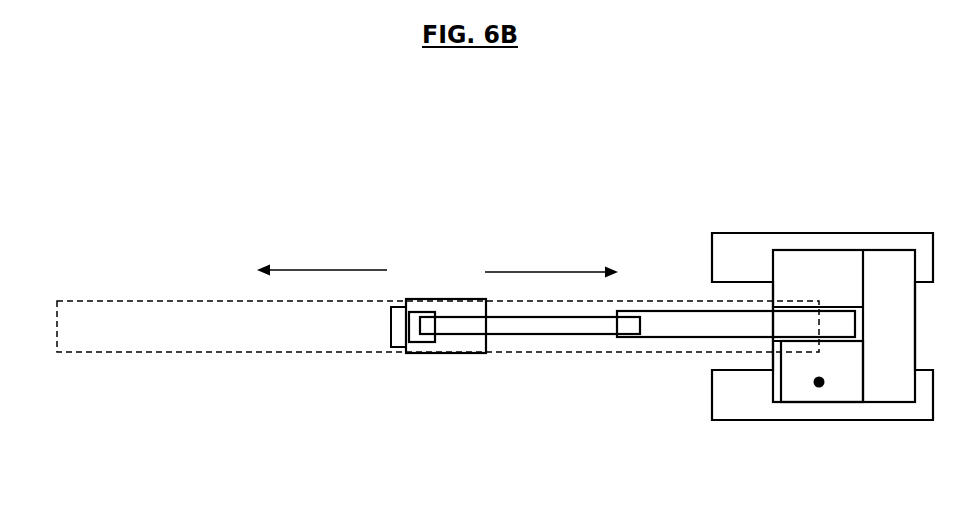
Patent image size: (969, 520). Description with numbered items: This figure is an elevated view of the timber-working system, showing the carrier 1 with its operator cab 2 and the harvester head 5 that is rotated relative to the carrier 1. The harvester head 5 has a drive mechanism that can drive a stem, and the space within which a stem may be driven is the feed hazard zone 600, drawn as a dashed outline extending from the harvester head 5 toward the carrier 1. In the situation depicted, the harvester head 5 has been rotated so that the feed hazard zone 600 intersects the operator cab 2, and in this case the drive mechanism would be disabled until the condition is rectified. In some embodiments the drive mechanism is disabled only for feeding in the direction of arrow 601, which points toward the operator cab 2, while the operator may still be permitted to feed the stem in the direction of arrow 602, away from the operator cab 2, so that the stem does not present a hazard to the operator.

The carrier 1 is at (757, 233).
The operator cab 2 is at (819, 382).
The harvester head 5 is at (437, 353).
The feed hazard zone 600 is at (657, 352).
The arrow indicating disabled feed direction 601 is at (551, 260).
The arrow indicating permitted feed direction 602 is at (322, 259).